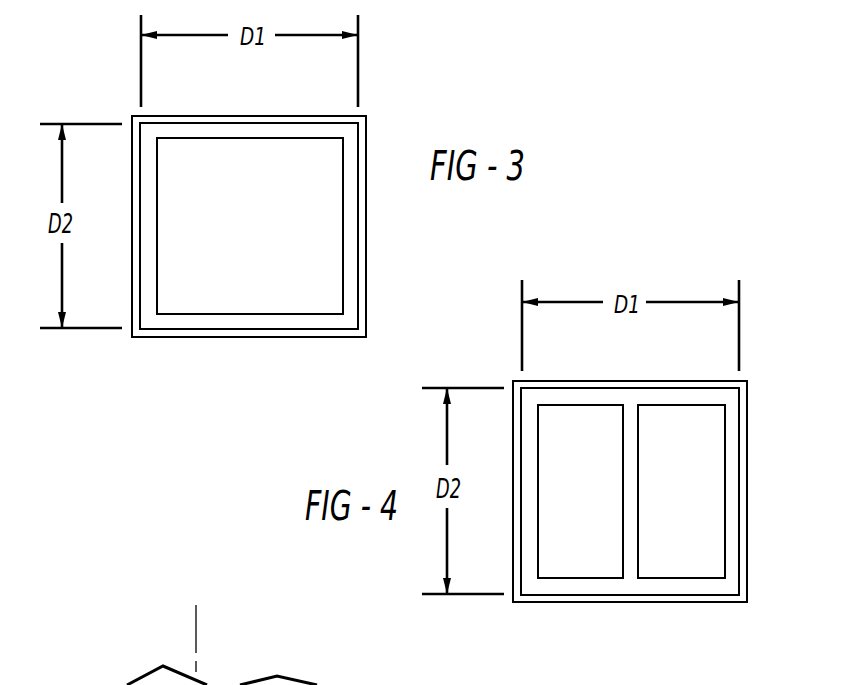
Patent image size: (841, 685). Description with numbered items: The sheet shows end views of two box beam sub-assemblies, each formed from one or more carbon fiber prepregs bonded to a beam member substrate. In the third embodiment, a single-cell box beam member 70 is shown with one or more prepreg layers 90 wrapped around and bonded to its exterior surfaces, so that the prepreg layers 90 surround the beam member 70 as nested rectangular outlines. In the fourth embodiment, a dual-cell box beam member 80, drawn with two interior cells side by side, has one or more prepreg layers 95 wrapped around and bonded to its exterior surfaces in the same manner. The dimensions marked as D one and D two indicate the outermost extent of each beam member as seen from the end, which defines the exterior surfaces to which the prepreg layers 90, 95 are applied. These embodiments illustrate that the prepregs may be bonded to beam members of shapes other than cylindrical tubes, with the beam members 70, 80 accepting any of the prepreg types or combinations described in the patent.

In FIG. 3, the single-cell box beam member 70 is at (227, 321).
In FIG. 3, the prepreg layers 90 is at (365, 154).
In FIG. 4, the dual-cell box beam member 80 is at (733, 520).
In FIG. 4, the prepreg layers 95 is at (672, 602).